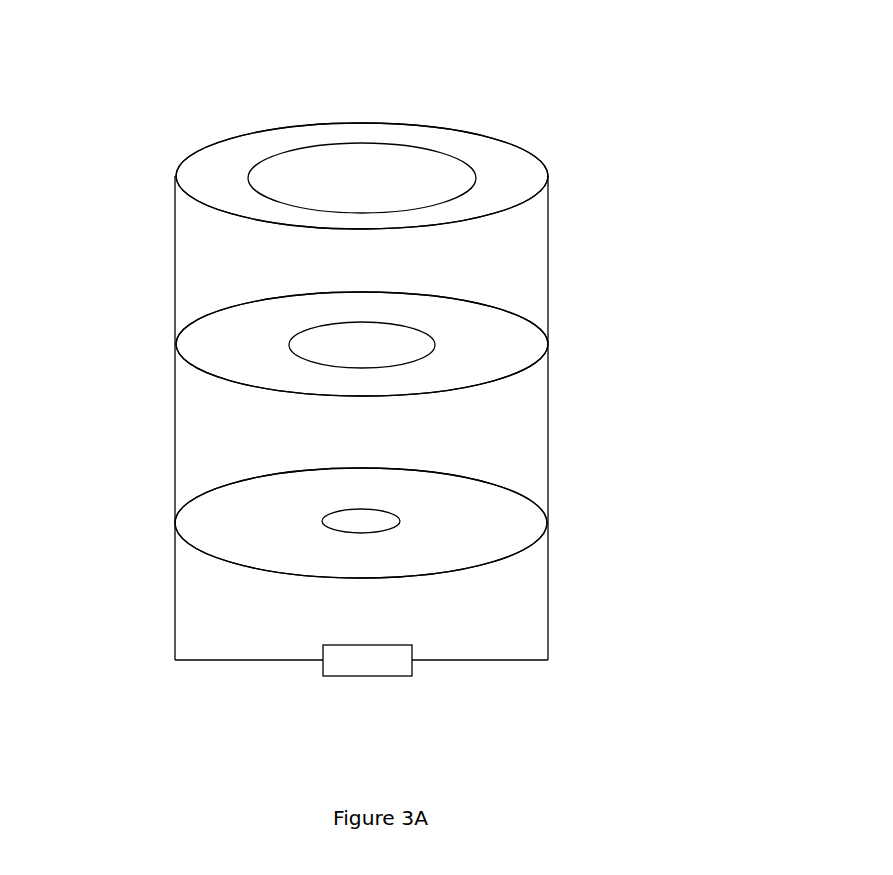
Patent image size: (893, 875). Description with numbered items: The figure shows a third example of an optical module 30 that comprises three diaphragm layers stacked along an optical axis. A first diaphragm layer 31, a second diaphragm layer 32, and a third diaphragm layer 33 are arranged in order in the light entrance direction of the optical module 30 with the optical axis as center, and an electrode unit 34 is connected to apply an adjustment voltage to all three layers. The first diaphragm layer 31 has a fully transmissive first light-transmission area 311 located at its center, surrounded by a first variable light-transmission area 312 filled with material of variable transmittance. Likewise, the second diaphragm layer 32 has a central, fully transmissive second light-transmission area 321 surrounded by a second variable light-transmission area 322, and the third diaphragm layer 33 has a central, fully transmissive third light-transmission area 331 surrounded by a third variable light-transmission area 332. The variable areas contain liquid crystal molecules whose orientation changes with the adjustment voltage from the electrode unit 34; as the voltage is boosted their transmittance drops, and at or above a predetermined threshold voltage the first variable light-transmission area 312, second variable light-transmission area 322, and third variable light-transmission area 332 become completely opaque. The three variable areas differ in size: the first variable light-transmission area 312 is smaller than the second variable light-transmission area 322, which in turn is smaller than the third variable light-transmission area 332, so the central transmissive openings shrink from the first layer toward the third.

The optical module 30 is at (544, 44).
The first diaphragm layer 31 is at (535, 125).
The first light-transmission area 311 is at (290, 175).
The first variable light-transmission area 312 is at (360, 135).
The second diaphragm layer 32 is at (527, 319).
The second light-transmission area 321 is at (313, 350).
The second variable light-transmission area 322 is at (428, 275).
The third diaphragm layer 33 is at (528, 497).
The third light-transmission area 331 is at (355, 527).
The third variable light-transmission area 332 is at (362, 487).
The electrode unit 34 is at (367, 676).